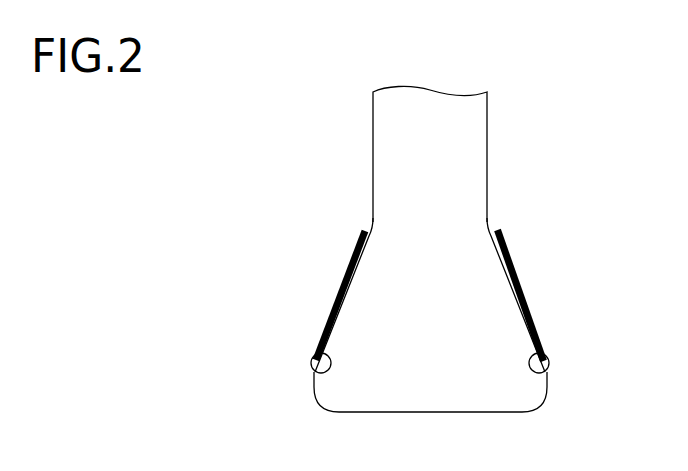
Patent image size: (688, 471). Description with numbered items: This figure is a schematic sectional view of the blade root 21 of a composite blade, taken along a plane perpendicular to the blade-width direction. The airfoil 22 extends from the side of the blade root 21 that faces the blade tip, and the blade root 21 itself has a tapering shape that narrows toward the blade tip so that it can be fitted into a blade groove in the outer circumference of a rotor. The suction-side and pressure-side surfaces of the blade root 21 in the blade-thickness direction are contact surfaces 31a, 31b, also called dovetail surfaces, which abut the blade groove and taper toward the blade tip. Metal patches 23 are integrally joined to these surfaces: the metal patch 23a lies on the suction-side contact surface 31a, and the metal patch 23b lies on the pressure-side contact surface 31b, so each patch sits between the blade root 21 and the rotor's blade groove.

The blade root 21 is at (430, 413).
The airfoil 22 is at (488, 137).
The metal patches 23 is at (430, 295).
The metal patch 23a is at (353, 258).
The metal patch 23b is at (507, 258).
The contact surface 31a is at (313, 373).
The contact surface 31b is at (548, 373).